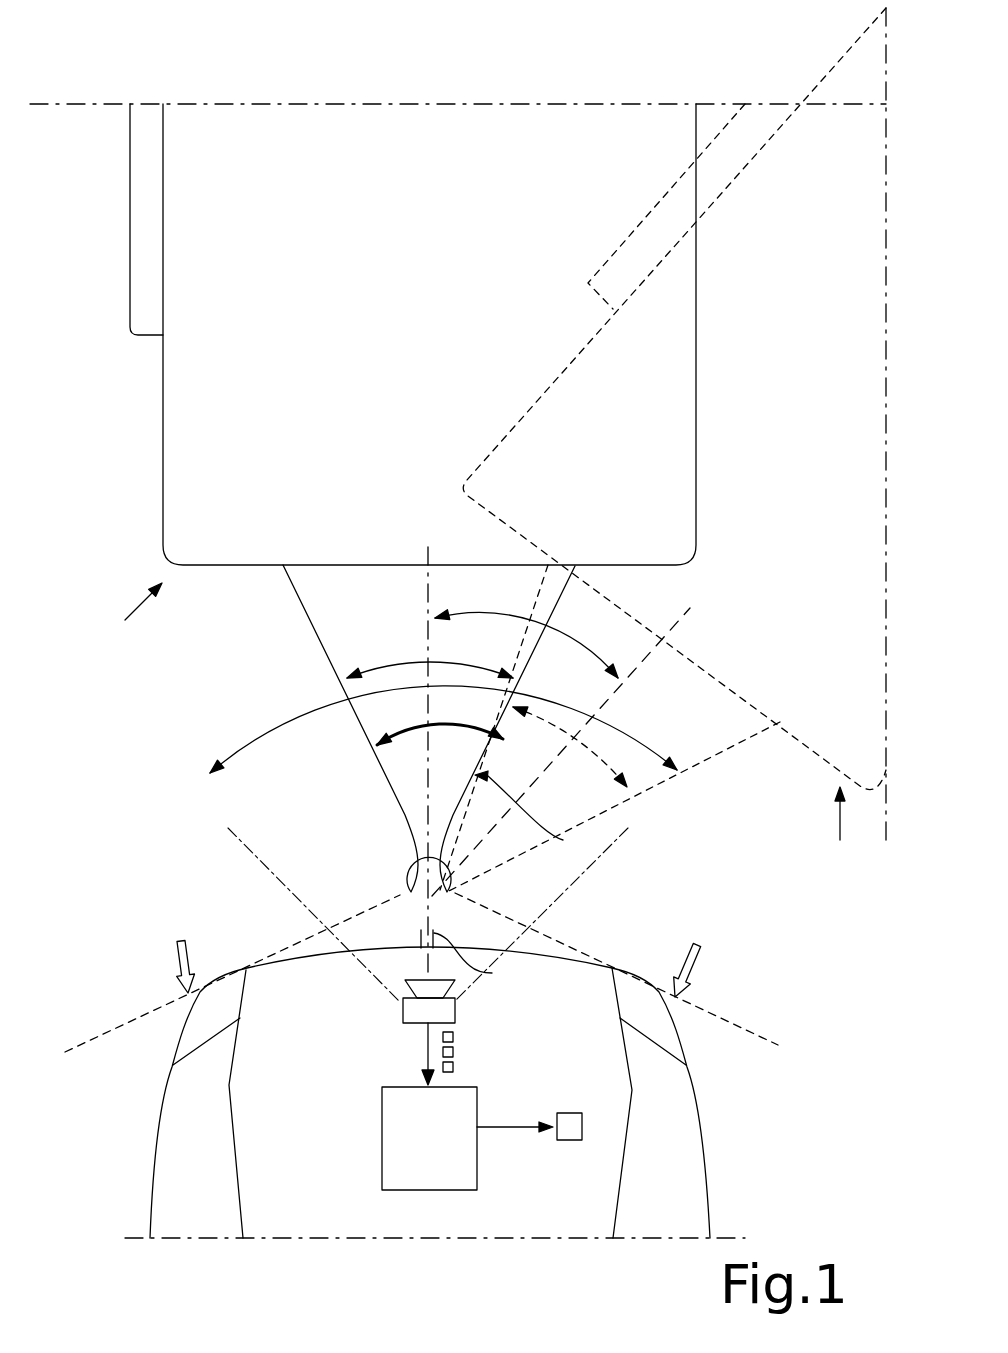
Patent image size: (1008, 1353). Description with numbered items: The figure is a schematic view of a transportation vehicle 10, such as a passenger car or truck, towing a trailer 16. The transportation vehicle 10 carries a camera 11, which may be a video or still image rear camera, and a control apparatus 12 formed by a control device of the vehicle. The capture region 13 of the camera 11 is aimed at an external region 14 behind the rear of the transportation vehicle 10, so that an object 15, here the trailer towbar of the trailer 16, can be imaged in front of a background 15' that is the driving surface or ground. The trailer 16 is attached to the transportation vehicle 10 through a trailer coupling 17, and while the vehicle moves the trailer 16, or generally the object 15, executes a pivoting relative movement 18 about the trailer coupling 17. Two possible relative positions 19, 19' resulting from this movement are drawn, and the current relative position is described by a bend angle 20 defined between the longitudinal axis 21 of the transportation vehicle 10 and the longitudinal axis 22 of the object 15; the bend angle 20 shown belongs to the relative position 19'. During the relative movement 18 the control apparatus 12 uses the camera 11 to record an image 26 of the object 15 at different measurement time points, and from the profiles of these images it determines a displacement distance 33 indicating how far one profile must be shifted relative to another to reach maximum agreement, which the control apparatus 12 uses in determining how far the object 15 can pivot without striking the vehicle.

The transportation vehicle 10 is at (170, 1075).
The camera 11 is at (457, 1012).
The control apparatus 12 is at (382, 1142).
The capture region 13 is at (260, 858).
The external region 14 is at (205, 689).
The object 15 is at (402, 728).
The background 15' is at (492, 729).
The trailer 16 is at (163, 495).
The trailer coupling 17 is at (483, 961).
The relative movement 18 is at (667, 752).
The relative position 19 is at (126, 617).
The relative position 19' is at (845, 830).
The bend angle 20 is at (503, 620).
The longitudinal axis 21 is at (427, 585).
The longitudinal axis 22 is at (625, 680).
The image 26 is at (453, 1037).
The displacement distance 33 is at (412, 736).